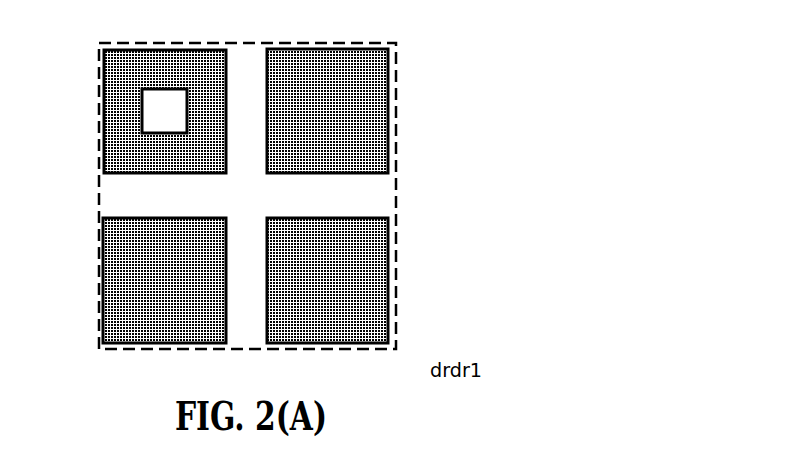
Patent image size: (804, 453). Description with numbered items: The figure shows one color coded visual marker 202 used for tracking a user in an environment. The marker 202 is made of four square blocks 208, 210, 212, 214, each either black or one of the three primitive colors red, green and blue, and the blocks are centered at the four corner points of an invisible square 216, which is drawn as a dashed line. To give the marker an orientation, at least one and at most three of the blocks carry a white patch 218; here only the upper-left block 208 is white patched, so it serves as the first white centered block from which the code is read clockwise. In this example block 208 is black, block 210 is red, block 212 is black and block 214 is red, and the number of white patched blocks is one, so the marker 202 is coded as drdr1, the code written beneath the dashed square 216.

The marker 202 is at (443, 196).
The first white centered block 208 is at (107, 108).
The block 210 is at (388, 93).
The block 212 is at (388, 302).
The block 214 is at (102, 275).
The invisible square 216 is at (98, 195).
The white patch 218 is at (163, 110).